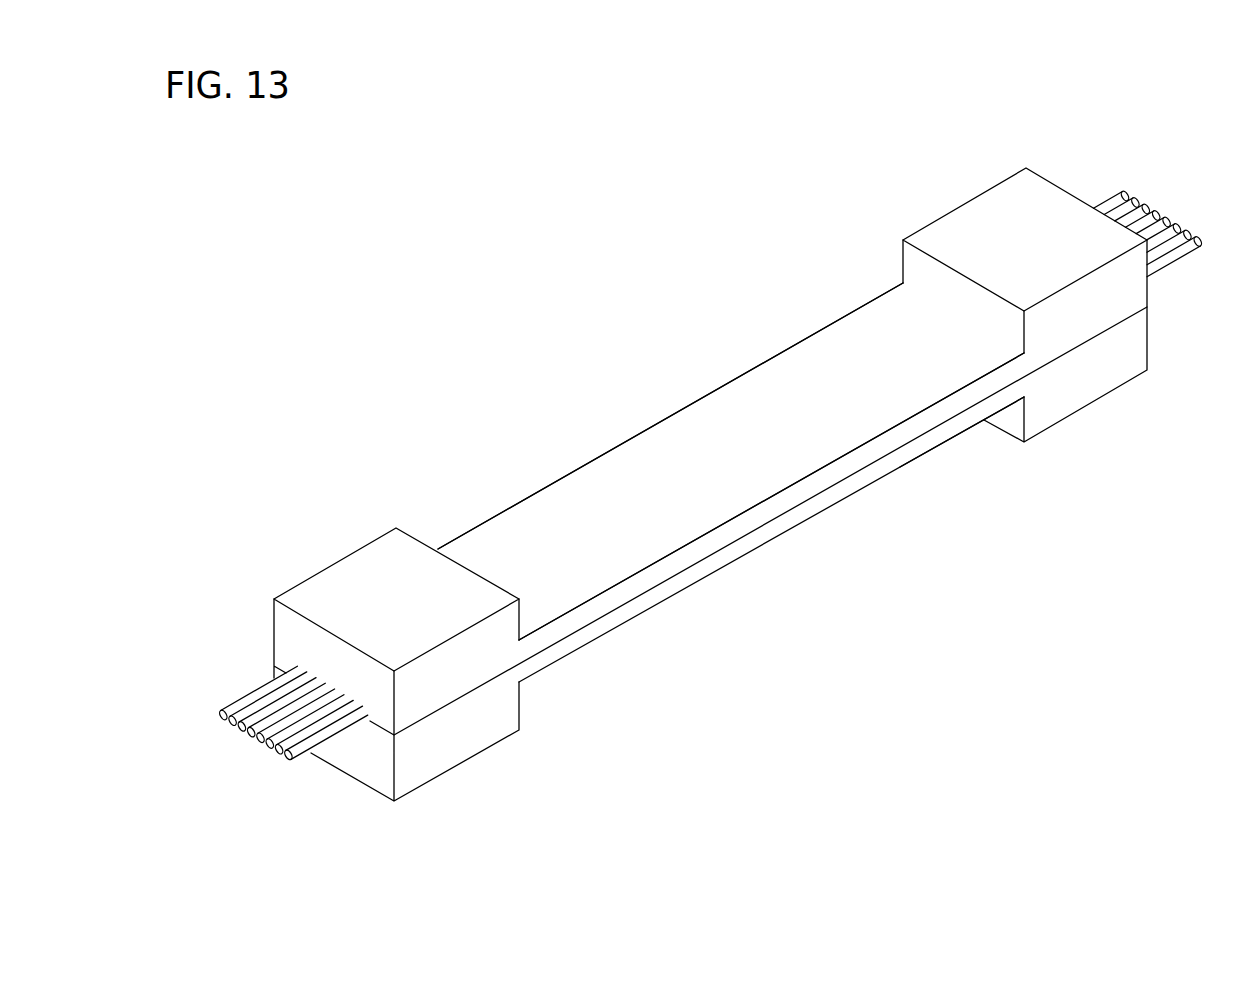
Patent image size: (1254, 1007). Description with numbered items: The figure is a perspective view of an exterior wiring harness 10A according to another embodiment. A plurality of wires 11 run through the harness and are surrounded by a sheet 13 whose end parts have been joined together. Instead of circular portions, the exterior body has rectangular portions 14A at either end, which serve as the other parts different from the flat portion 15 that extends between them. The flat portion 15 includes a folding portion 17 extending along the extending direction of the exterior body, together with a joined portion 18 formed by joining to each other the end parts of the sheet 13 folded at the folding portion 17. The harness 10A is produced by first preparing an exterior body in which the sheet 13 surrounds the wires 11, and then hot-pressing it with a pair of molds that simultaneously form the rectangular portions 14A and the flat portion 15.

The exterior wiring harness 10A is at (697, 202).
The wires 11 is at (1197, 246).
The sheet 13 is at (694, 435).
The rectangular portions 14A is at (988, 217).
The flat portion 15 is at (557, 522).
The folding portion 17 is at (983, 398).
The joined portion 18 is at (275, 667).